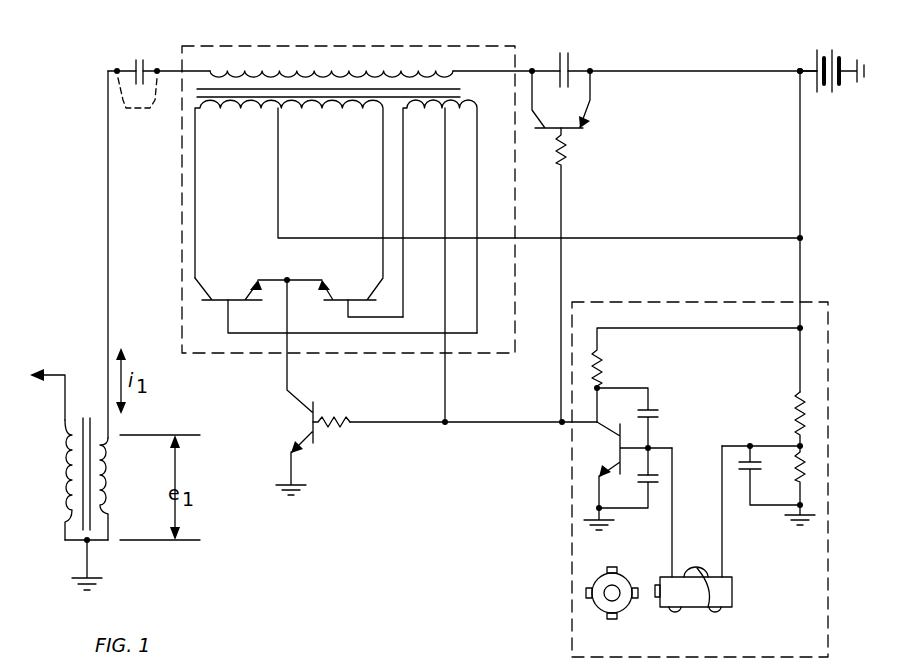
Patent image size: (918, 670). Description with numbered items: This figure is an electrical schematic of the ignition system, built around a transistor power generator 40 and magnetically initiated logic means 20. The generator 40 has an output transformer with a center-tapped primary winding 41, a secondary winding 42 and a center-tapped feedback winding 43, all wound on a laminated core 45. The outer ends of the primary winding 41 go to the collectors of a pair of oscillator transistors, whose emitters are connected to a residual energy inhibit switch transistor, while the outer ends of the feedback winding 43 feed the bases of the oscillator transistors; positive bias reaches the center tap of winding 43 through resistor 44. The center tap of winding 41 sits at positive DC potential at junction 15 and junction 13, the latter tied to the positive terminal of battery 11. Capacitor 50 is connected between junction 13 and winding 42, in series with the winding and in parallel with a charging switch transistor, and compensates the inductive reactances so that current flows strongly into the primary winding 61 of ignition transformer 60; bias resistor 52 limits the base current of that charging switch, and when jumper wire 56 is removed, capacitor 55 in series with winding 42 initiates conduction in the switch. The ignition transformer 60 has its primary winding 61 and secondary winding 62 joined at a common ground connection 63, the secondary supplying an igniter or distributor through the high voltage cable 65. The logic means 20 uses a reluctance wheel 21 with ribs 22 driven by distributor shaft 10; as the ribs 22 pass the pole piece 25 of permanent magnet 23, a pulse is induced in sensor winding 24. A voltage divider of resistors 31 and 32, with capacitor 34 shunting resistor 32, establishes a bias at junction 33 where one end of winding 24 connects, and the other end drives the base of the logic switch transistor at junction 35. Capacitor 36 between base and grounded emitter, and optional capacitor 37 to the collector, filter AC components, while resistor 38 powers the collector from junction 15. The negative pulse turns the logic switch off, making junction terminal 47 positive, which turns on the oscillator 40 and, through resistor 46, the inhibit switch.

The distributor shaft 10 is at (612, 593).
The battery 11 is at (822, 90).
The junction 13 is at (800, 71).
The junction 15 is at (800, 238).
The logic means 20 is at (568, 527).
The reluctance wheel 21 is at (598, 580).
The ribs 22 is at (626, 578).
The permanent magnet 23 is at (734, 584).
The sensor winding 24 is at (715, 612).
The pole piece 25 is at (658, 610).
The resistor 31 is at (796, 400).
The resistor 32 is at (796, 474).
The junction 33 is at (800, 436).
The capacitor 34 is at (736, 511).
The base junction 35 is at (648, 448).
The capacitor 36 is at (642, 482).
The capacitor 37 is at (648, 410).
The resistor 38 is at (597, 371).
The transistor power generator 40 is at (284, 45).
The primary winding 41 is at (214, 117).
The secondary winding 42 is at (306, 62).
The feedback winding 43 is at (477, 118).
The resistor 44 is at (447, 128).
The laminated core 45 is at (460, 91).
The resistor 46 is at (330, 429).
The junction terminal 47 is at (560, 424).
The capacitor 50 is at (570, 67).
The bias resistor 52 is at (568, 152).
The capacitor 55 is at (126, 66).
The jumper wire 56 is at (128, 108).
The ignition transformer 60 is at (80, 372).
The primary winding 61 is at (106, 478).
The secondary winding 62 is at (68, 482).
The common ground connection 63 is at (90, 542).
The high voltage cable 65 is at (33, 358).